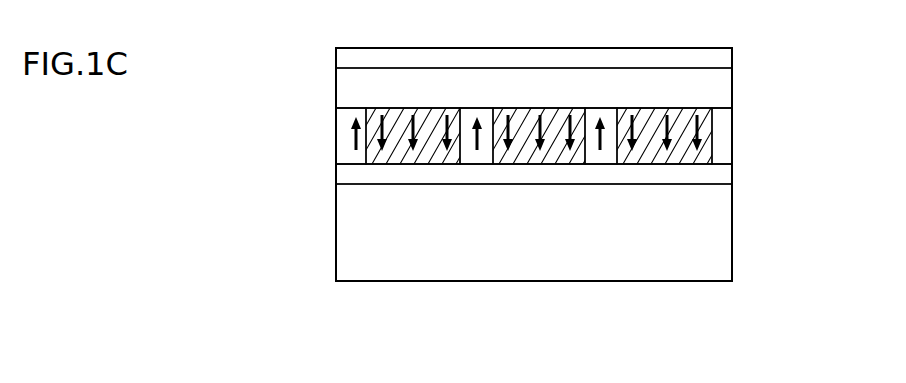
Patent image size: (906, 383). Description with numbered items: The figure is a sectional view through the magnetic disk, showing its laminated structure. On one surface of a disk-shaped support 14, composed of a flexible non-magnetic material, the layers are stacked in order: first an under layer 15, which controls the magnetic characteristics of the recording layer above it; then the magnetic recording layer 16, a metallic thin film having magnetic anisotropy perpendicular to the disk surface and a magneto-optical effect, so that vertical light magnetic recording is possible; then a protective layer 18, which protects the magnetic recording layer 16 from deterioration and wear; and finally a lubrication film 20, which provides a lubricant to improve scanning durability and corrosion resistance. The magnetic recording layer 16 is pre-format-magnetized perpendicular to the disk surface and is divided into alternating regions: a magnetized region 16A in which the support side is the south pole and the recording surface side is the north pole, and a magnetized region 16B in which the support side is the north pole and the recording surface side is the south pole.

The support body 14 is at (718, 217).
The under layer 15 is at (720, 177).
The magnetic recording layer 16 is at (736, 141).
The magnetized region 16A is at (468, 112).
The magnetized region 16B is at (392, 163).
The protective layer 18 is at (717, 82).
The lubrication film 20 is at (732, 50).